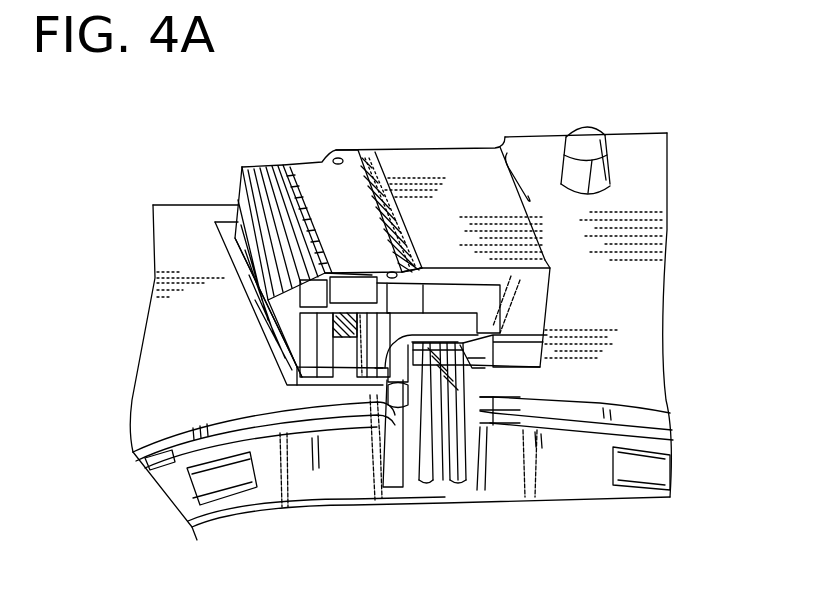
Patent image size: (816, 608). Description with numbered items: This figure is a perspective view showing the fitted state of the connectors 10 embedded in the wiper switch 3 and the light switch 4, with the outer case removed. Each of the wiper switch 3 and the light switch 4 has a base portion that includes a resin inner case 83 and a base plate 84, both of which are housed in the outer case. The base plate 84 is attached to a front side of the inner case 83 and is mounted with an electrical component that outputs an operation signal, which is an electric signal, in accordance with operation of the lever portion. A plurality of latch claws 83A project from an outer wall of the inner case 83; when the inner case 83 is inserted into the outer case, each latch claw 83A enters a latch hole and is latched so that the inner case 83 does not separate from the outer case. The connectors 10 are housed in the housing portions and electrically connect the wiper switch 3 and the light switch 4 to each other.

The wiper switch 3 is at (162, 200).
The light switch 4 is at (633, 131).
The connector 10 is at (313, 155).
The base plate 84 is at (205, 212).
The inner case 83 is at (317, 480).
The latch claw 83A is at (222, 478).